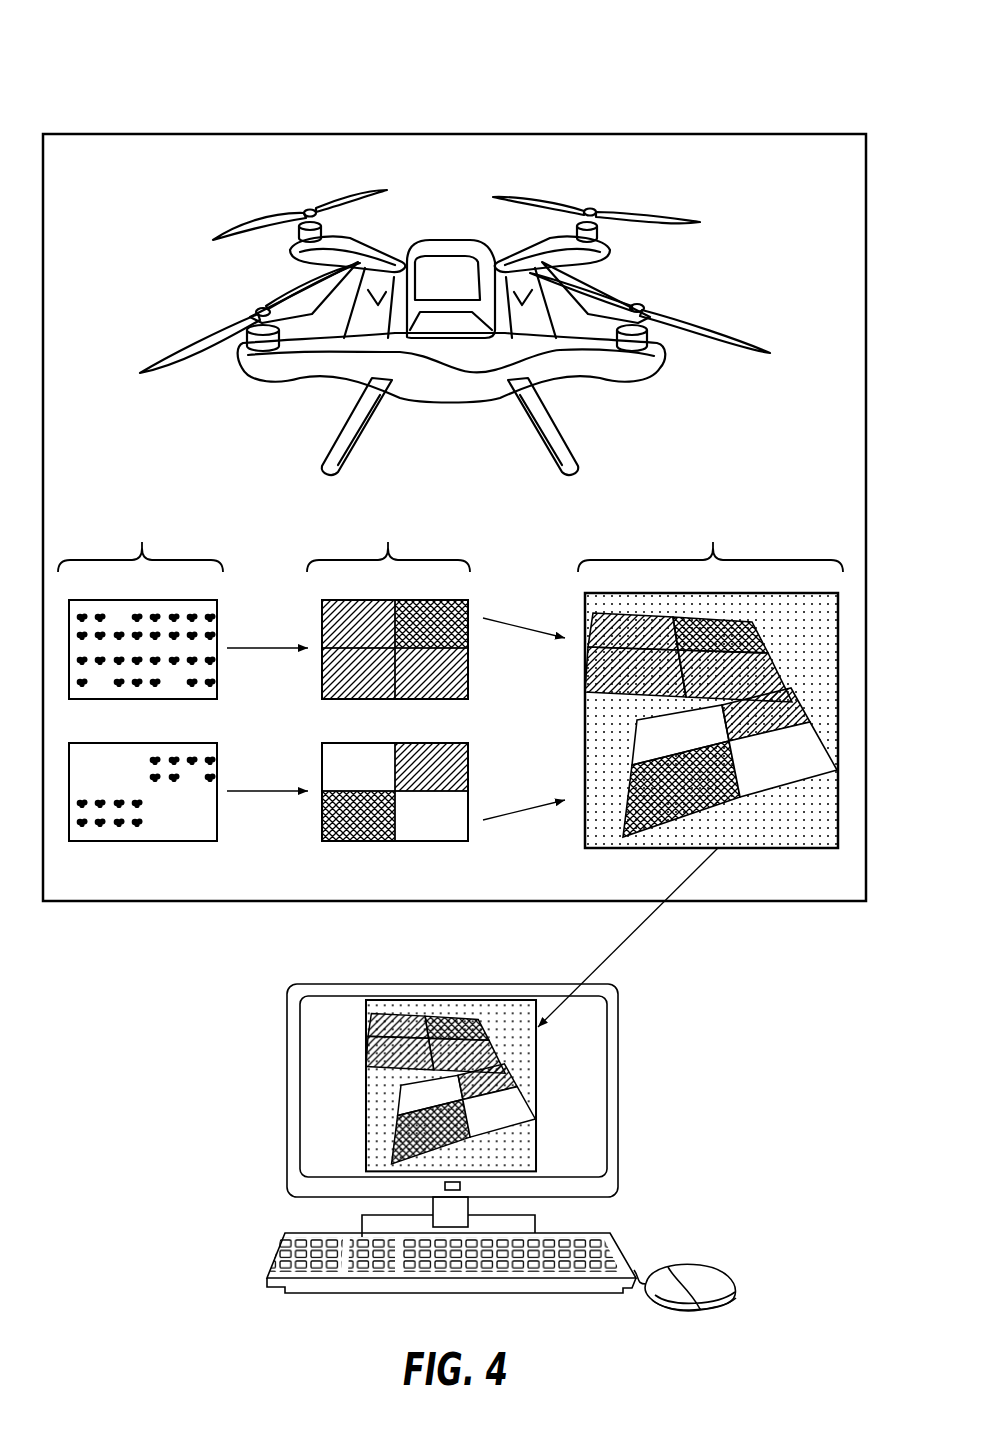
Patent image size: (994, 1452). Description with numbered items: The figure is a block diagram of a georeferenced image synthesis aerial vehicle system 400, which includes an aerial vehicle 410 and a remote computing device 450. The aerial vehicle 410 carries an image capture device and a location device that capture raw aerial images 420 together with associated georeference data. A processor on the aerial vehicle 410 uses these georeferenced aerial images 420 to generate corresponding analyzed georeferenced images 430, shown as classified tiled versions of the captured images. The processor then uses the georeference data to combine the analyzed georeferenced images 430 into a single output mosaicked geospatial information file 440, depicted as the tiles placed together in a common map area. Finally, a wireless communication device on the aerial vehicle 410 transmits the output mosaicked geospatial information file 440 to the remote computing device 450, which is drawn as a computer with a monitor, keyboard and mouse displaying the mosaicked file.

The georeferenced image synthesis aerial vehicle system 400 is at (832, 61).
The aerial vehicle 410 is at (122, 132).
The raw aerial images 420 is at (140, 677).
The analyzed georeferenced images 430 is at (388, 677).
The output mosaicked geospatial information file 440 is at (710, 680).
The remote computing device 450 is at (290, 1040).